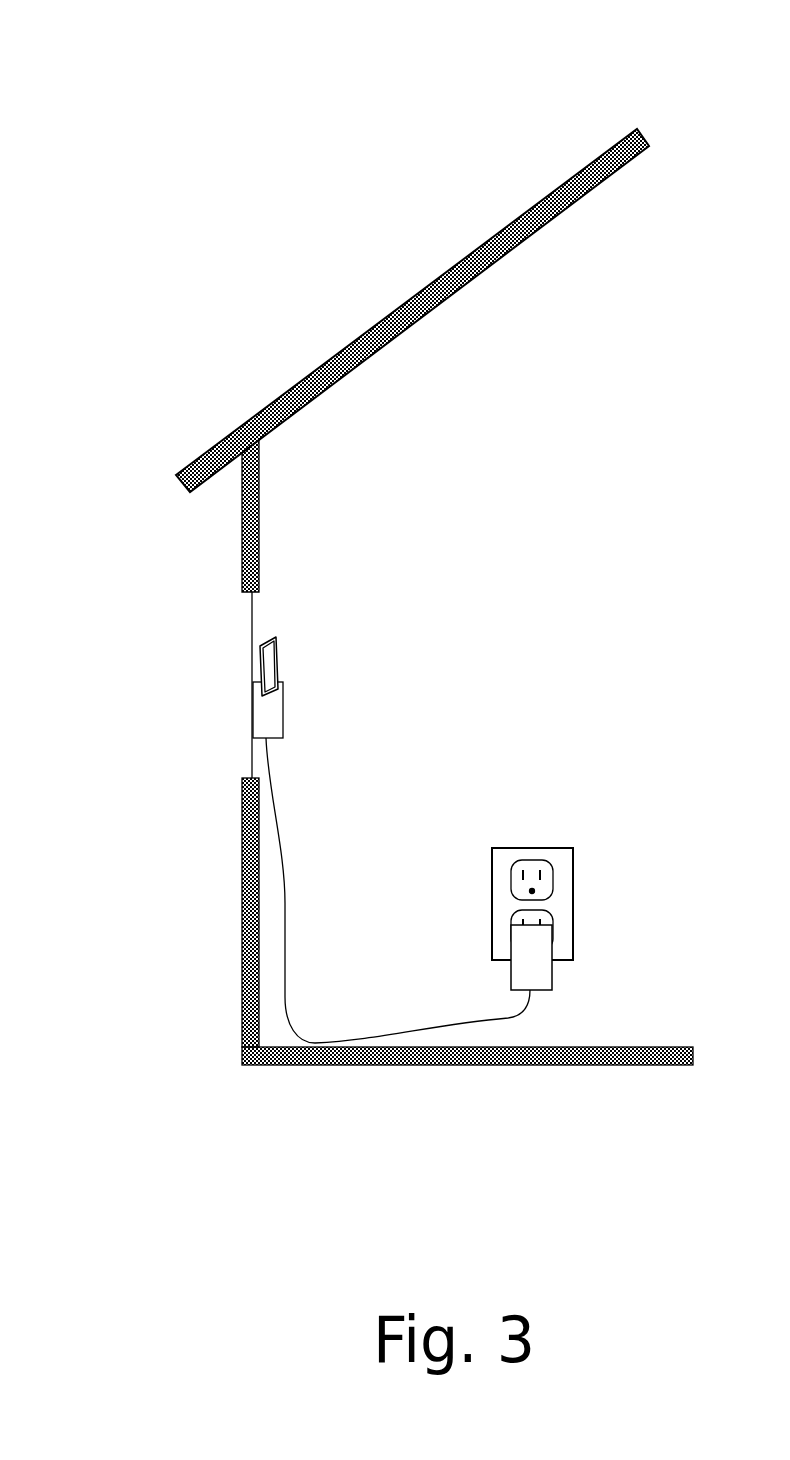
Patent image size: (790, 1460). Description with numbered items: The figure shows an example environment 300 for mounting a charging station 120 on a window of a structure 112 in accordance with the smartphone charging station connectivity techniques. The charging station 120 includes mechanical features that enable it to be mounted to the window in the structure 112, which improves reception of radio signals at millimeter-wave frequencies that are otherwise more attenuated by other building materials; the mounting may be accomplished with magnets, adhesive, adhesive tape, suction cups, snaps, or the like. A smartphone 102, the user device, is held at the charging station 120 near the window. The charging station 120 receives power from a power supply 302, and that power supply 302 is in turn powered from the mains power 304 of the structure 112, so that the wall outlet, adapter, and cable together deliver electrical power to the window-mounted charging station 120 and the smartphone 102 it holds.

The environment with vehicle charging system 300 is at (152, 41).
The structure 112 is at (421, 285).
The smartphone 102 is at (280, 634).
The charging station 120 is at (287, 713).
The mains power 304 is at (577, 843).
The power supply 302 is at (555, 920).